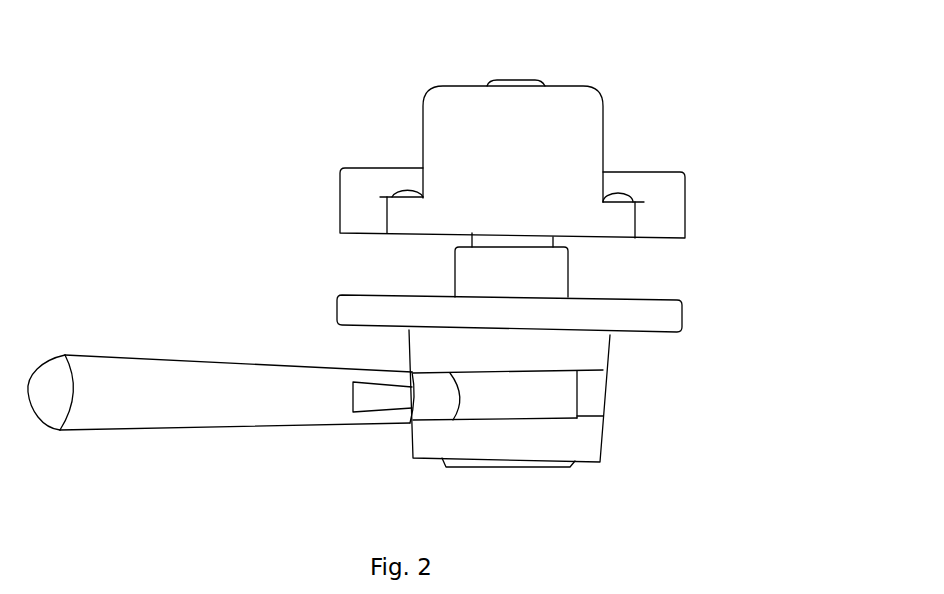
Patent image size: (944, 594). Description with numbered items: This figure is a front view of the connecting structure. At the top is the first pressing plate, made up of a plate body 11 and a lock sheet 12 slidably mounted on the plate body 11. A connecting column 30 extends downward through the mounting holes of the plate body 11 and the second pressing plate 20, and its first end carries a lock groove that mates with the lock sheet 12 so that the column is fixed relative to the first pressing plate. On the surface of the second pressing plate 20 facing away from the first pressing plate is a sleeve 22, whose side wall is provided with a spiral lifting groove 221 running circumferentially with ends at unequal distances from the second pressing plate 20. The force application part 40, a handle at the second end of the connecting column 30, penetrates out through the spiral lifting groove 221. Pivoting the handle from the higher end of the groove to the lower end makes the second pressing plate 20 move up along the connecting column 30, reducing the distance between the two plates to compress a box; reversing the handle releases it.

The plate body 11 is at (665, 193).
The lock sheet 12 is at (557, 110).
The second pressing plate 20 is at (640, 312).
The sleeve 22 is at (603, 435).
The spiral lifting groove 221 is at (530, 397).
The connecting column 30 is at (497, 273).
The force application part 40 is at (190, 405).